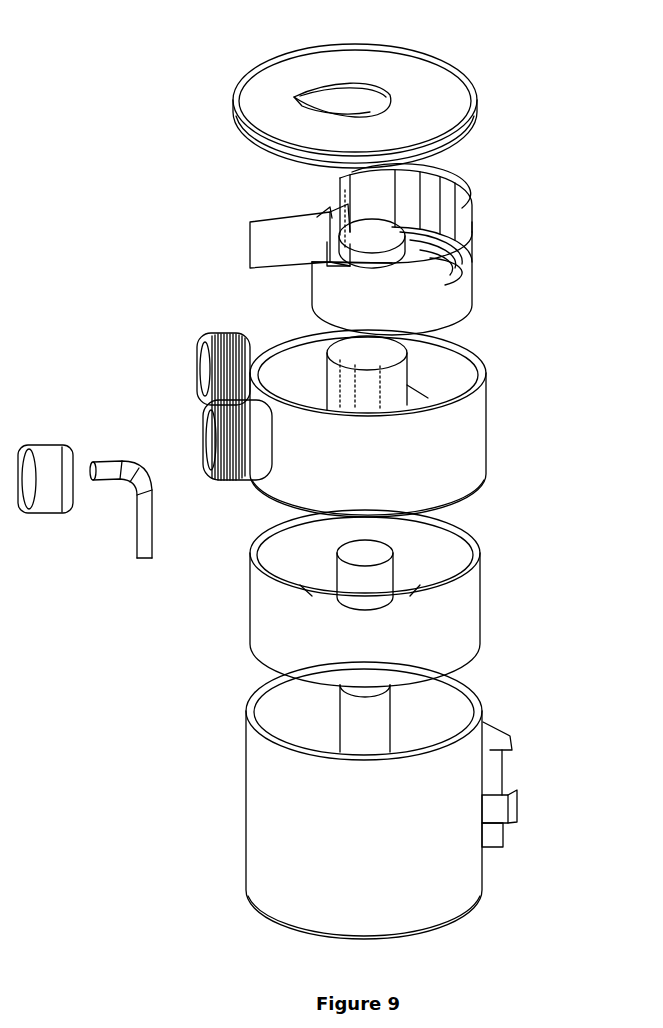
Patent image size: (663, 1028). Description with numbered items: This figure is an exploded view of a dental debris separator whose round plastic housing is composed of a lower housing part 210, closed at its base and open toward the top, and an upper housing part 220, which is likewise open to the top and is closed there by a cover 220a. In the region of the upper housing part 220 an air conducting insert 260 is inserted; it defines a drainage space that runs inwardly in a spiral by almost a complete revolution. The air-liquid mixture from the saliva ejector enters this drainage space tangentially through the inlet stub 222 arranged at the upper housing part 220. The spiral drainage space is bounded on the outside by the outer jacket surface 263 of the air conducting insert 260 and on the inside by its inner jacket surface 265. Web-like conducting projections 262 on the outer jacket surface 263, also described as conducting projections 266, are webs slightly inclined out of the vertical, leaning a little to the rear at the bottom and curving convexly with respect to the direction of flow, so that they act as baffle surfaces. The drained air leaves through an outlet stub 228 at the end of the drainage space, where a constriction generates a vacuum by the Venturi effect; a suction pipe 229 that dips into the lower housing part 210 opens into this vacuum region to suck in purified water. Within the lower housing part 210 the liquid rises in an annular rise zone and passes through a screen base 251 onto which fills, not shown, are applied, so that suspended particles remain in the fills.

The cover 220a is at (425, 90).
The air conducting insert 260 is at (379, 235).
The web-like conducting projections 262 is at (463, 185).
The outer jacket surface 263 is at (460, 282).
The inner jacket surface 265 is at (360, 230).
The conducting projections 266 is at (370, 202).
The upper housing part 220 is at (465, 432).
The inlet stub 222 is at (212, 335).
The suction pipe 229 is at (135, 462).
The outlet stub 228 is at (238, 478).
The screen base 251 is at (468, 625).
The lower housing part 210 is at (273, 812).